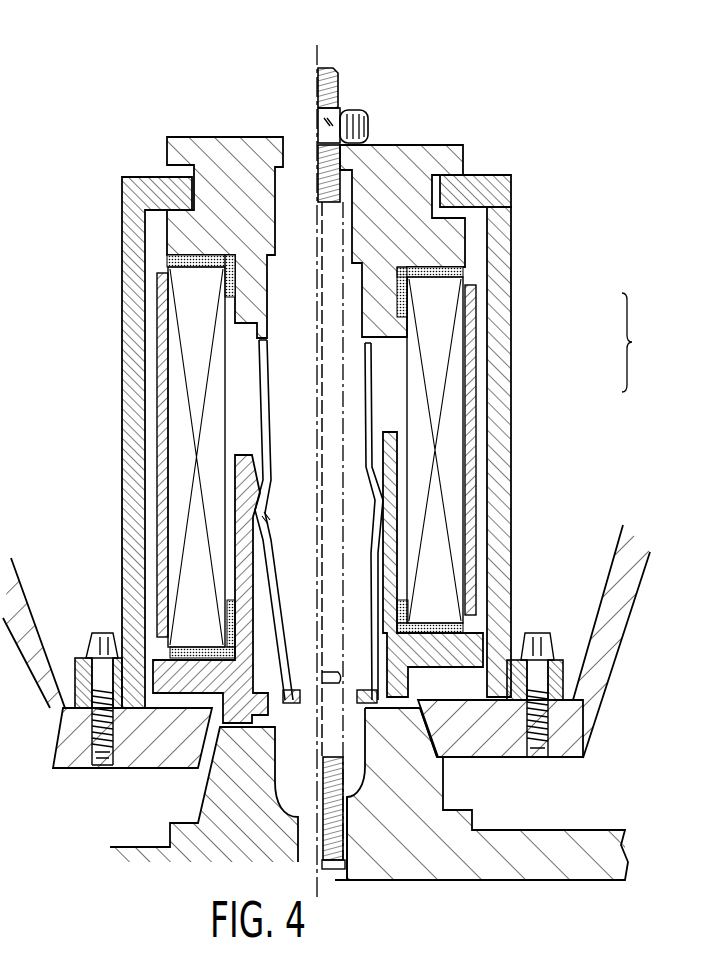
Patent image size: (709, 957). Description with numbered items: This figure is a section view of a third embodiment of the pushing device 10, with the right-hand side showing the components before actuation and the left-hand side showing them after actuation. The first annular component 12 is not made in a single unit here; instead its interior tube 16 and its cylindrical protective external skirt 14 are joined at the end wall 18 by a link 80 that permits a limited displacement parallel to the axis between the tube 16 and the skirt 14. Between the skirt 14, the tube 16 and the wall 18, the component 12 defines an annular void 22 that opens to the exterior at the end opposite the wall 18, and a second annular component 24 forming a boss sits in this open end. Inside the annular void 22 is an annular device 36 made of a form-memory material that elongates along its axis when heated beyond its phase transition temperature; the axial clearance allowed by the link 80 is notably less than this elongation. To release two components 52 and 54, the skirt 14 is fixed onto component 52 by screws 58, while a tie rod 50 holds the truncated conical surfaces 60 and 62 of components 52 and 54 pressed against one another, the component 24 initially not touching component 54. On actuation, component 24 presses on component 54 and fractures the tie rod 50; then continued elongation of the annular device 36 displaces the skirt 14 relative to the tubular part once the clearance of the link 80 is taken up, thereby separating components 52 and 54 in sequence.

The pushing device 10 is at (243, 112).
The first annular component 12 is at (647, 342).
The cylindrical protective external skirt 14 is at (518, 381).
The interior tube 16 is at (380, 350).
The end wall 18 is at (457, 183).
The annular void 22 is at (478, 235).
The second annular component 24 is at (497, 633).
The annular device 36 is at (452, 445).
The tie rod 50 is at (348, 835).
The component 52 is at (52, 768).
The component 54 is at (583, 830).
The screws 58 is at (563, 662).
The truncated conical surface 60 is at (422, 750).
The truncated conical surface 62 is at (428, 730).
The link 80 is at (157, 167).